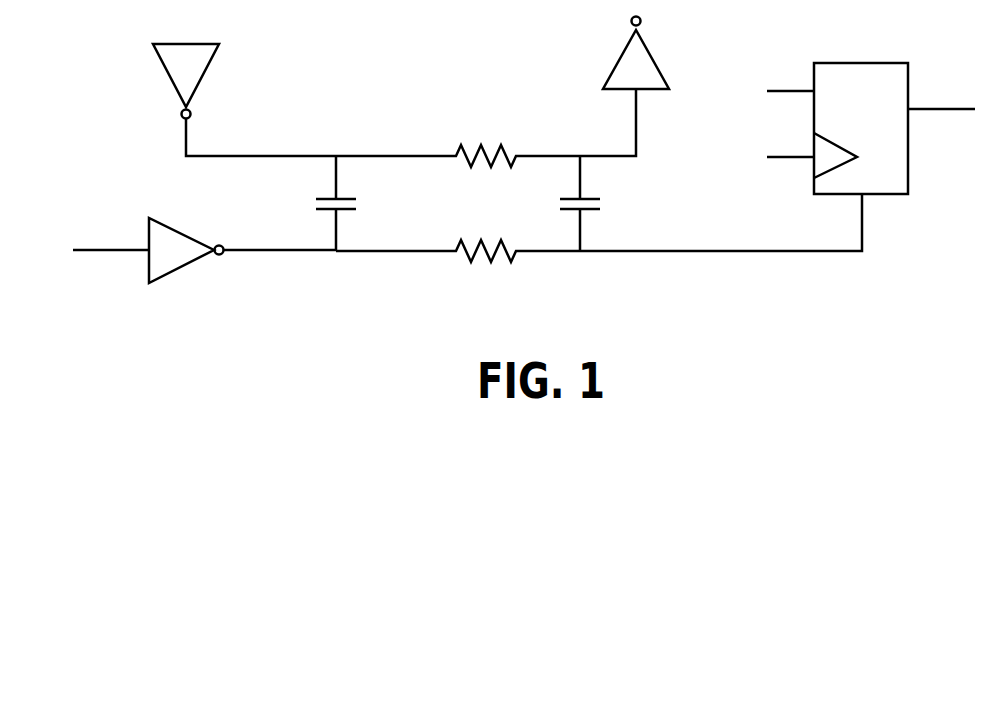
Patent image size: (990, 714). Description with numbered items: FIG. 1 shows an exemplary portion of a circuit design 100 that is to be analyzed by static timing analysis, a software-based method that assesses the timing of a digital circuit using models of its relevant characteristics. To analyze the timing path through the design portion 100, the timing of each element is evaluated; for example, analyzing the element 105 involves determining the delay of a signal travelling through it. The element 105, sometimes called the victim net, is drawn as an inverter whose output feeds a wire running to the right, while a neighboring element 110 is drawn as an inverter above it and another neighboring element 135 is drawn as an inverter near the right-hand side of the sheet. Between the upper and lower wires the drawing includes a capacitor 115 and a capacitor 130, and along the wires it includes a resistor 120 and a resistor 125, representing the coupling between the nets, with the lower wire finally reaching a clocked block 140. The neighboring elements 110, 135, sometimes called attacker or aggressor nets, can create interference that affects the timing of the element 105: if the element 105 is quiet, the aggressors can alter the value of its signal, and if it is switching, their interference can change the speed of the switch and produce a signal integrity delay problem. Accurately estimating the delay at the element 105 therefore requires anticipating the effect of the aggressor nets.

The circuit design portion 100 is at (568, 443).
The element 105 is at (202, 316).
The neighboring element 110 is at (258, 104).
The capacitor 115 is at (308, 216).
The resistor 120 is at (507, 132).
The resistor 125 is at (507, 301).
The capacitor 130 is at (647, 216).
The neighboring element 135 is at (718, 69).
The flip-flop 140 is at (882, 112).